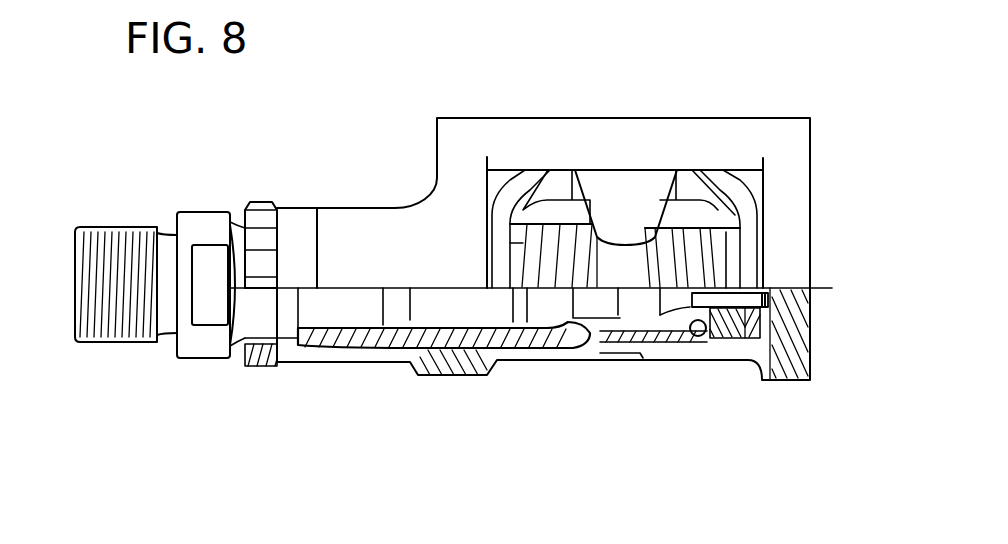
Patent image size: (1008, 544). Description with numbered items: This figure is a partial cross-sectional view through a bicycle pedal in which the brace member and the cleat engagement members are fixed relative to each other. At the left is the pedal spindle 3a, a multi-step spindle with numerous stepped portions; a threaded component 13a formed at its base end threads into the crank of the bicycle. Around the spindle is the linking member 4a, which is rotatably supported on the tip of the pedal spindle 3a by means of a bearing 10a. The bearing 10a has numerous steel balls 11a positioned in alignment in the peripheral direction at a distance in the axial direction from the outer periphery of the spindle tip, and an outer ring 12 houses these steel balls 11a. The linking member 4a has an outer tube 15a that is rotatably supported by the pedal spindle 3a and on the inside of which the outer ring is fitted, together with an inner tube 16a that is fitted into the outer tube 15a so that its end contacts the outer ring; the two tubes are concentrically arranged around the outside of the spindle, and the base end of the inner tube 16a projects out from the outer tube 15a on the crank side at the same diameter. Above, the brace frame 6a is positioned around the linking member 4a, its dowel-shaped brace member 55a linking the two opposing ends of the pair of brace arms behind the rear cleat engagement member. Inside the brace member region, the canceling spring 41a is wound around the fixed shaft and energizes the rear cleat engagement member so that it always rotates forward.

The pedal spindle 3a is at (192, 222).
The threaded component 13a is at (107, 343).
The linking member 4a is at (375, 378).
The housing 6a is at (433, 392).
The inner tube 16a is at (293, 370).
The outer tube 15a is at (508, 370).
The steel balls 11a is at (573, 362).
The bearing 10a is at (620, 362).
The stopper 12 is at (665, 362).
The brace member 55a is at (645, 137).
The canceling spring 41a is at (725, 167).